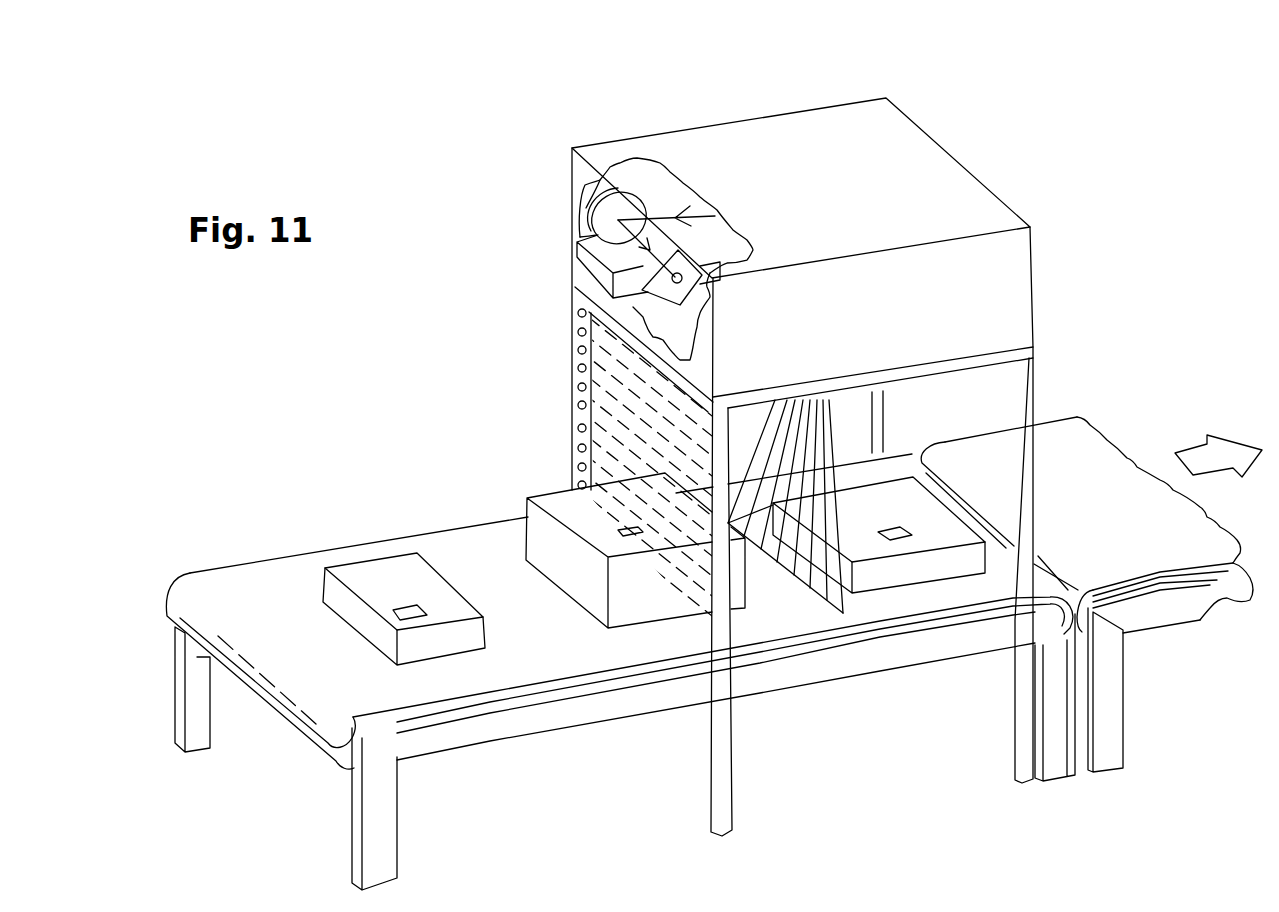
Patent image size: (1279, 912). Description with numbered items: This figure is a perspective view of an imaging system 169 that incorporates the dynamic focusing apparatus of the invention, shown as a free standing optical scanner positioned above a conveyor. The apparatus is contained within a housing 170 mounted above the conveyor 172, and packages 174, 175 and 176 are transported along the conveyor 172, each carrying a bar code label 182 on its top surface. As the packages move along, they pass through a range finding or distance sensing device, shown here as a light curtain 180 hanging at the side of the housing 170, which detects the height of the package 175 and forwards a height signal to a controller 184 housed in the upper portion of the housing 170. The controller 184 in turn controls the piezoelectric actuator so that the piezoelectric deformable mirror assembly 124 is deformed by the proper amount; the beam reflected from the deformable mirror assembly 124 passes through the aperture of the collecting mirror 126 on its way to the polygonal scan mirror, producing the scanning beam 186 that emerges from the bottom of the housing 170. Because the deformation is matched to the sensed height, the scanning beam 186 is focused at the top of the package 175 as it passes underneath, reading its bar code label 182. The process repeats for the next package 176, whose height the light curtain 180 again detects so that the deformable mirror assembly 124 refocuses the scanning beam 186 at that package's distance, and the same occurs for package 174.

The imaging system 169 is at (403, 141).
The housing 170 is at (897, 100).
The piezoelectric deformable mirror assembly 124 is at (618, 192).
The collecting mirror 126 is at (712, 232).
The controller 184 is at (587, 257).
The scanning beam 186 is at (830, 443).
The light curtain 180 is at (612, 398).
The conveyor 172 is at (243, 563).
The package 174 is at (883, 573).
The package 175 is at (557, 495).
The package 176 is at (333, 567).
The bar code label 182 is at (618, 533).